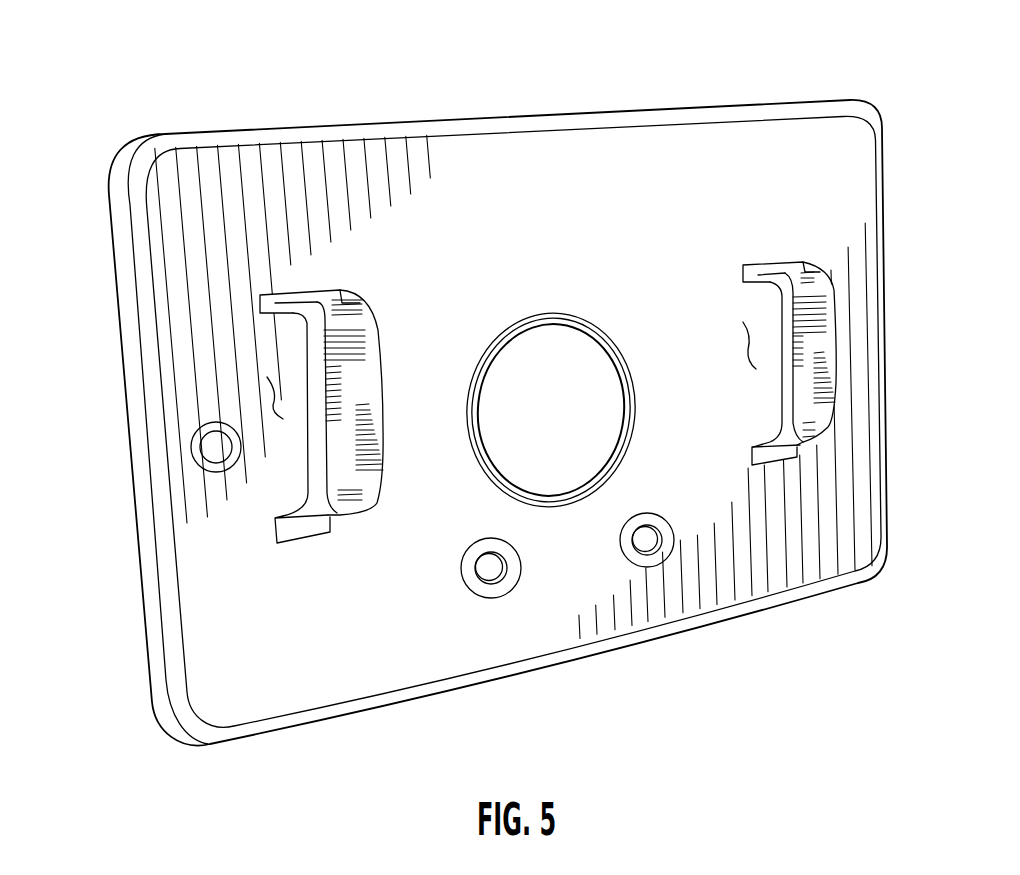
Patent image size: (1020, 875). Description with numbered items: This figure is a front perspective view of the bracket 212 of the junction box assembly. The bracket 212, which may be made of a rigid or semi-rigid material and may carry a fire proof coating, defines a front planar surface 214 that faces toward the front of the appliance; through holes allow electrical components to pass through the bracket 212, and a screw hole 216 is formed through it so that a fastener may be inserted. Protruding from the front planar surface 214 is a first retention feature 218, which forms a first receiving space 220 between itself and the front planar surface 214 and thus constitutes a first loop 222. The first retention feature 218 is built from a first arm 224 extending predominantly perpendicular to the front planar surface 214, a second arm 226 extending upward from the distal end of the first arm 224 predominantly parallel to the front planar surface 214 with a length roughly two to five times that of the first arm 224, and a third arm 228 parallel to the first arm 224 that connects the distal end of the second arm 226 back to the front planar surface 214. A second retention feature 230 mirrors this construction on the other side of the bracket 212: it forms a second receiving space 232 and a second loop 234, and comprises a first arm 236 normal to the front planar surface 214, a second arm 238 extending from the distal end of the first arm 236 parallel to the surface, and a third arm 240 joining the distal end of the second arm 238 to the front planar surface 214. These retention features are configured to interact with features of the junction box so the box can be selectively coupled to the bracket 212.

The bracket 212 is at (377, 132).
The front planar surface 214 is at (526, 194).
The screw hole 216 is at (206, 438).
The first retention feature 218 is at (234, 369).
The first receiving space 220 is at (270, 392).
The first loop 222 is at (293, 465).
The first arm 224 is at (327, 513).
The second arm 226 is at (364, 383).
The third arm 228 is at (333, 300).
The second retention feature 230 is at (787, 313).
The second receiving space 232 is at (745, 341).
The second loop 234 is at (735, 425).
The first arm 236 is at (788, 456).
The second arm 238 is at (823, 352).
The third arm 240 is at (792, 268).